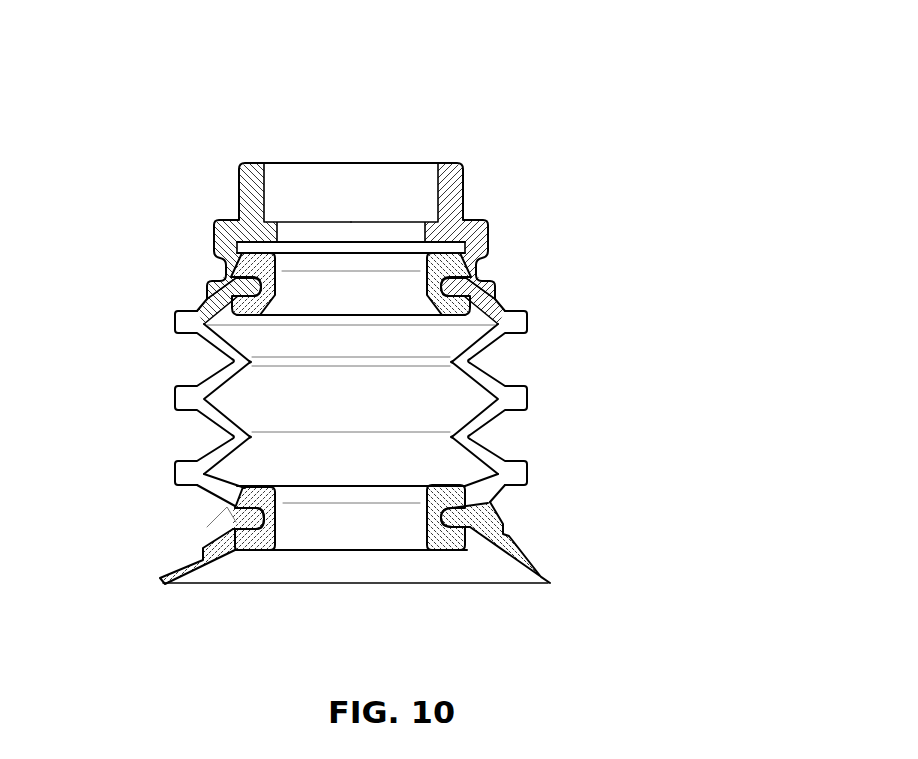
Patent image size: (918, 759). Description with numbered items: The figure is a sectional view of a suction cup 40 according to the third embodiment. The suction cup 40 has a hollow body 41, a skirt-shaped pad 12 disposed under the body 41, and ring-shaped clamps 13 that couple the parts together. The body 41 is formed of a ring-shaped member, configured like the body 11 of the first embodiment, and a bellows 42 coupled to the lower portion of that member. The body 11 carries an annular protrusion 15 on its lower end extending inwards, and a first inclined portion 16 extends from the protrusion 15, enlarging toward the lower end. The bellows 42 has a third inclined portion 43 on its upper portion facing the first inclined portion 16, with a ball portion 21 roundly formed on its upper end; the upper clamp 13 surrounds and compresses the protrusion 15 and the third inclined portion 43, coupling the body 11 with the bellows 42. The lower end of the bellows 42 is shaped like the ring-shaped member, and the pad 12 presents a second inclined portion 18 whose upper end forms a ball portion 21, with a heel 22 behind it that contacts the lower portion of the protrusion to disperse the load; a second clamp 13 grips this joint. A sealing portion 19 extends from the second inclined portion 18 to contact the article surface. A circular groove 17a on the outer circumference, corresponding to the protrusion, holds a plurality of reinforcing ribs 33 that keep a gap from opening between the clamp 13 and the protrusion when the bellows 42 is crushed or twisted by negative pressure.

The suction cup 40 is at (409, 106).
The body 11 is at (510, 221).
The hollow body 41 is at (617, 187).
The bellows 42 is at (541, 297).
The third inclined portion 43 is at (240, 297).
The first inclined portion 16 is at (238, 284).
The clamp 13 is at (284, 303).
The protrusion 15 is at (263, 486).
The heel 22 is at (235, 508).
The second inclined portion 18 is at (220, 535).
The sealing portion 19 is at (178, 569).
The ball portion 21 is at (277, 542).
The circular groove 17a is at (507, 503).
The reinforcing ribs 33 is at (497, 513).
The pad 12 is at (557, 566).